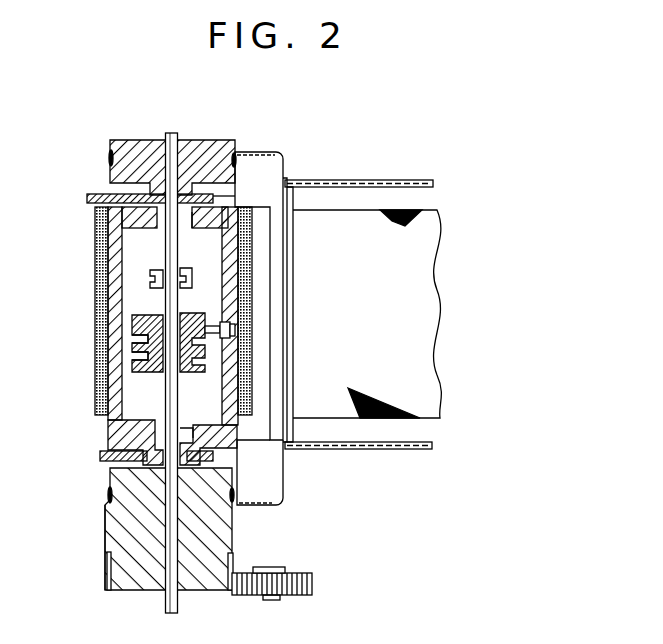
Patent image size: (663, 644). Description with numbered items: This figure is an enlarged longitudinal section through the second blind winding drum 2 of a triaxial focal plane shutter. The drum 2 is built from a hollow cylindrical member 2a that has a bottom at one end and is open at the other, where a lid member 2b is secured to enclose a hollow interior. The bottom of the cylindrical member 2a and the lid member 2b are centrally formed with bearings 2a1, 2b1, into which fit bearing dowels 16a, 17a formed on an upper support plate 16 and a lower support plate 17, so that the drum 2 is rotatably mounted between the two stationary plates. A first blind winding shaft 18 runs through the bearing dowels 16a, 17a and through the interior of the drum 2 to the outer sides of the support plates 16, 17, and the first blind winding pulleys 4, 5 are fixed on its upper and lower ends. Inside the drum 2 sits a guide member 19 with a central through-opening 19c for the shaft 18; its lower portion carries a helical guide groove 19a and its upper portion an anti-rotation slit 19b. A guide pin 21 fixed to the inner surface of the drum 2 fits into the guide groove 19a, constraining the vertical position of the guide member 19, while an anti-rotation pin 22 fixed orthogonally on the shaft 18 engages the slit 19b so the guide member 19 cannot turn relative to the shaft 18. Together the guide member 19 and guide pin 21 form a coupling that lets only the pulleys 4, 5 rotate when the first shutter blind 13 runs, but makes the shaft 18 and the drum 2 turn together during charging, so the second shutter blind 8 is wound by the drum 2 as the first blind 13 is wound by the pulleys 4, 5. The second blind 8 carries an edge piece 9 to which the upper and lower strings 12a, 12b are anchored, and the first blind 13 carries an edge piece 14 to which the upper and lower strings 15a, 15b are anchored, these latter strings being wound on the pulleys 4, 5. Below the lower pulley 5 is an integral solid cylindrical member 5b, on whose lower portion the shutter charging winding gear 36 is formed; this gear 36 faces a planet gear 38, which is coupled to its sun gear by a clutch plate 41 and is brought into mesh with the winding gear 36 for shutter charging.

The second blind winding drum 2 is at (157, 336).
The hollow cylindrical member 2a is at (118, 392).
The bearing 2a1 is at (189, 430).
The lid member 2b is at (119, 219).
The bearing 2b1 is at (193, 213).
The first blind winding pulley 4 is at (126, 148).
The first blind winding pulley 5 is at (151, 528).
The solid cylindrical member 5b is at (110, 540).
The second shutter blind 8 is at (100, 268).
The edge piece 9 is at (288, 291).
The upper string 12a is at (356, 181).
The lower string 12b is at (340, 449).
The first shutter blind 13 is at (437, 226).
The edge piece 14 is at (293, 314).
The upper string 15a is at (238, 152).
The lower string 15b is at (256, 505).
The upper support plate 16 is at (97, 194).
The bearing dowel 16a is at (221, 203).
The lower support plate 17 is at (100, 458).
The bearing dowel 17a is at (212, 454).
The first blind winding shaft 18 is at (167, 603).
The guide member 19 is at (109, 328).
The helical guide groove 19a is at (140, 351).
The anti-rotation slit 19b is at (151, 282).
The through-opening 19c is at (178, 360).
The guide pin 21 is at (212, 327).
The anti-rotation pin 22 is at (184, 281).
The winding gear 36 is at (105, 578).
The planet gear 38 is at (290, 597).
The clutch plate 41 is at (288, 570).